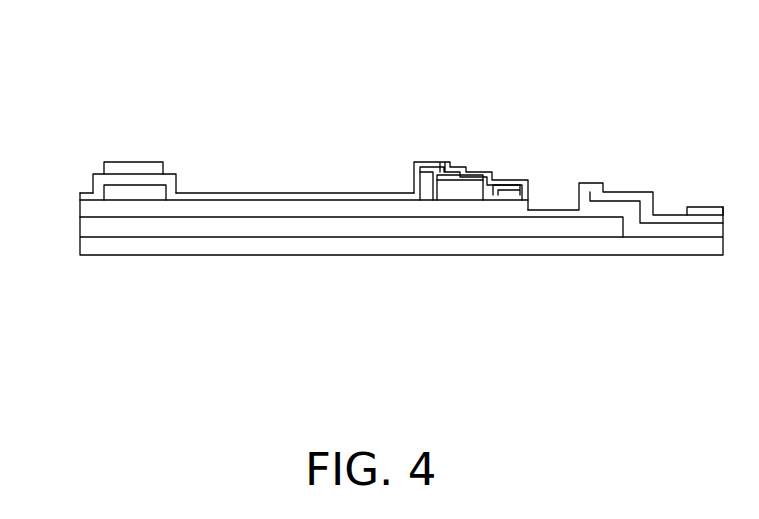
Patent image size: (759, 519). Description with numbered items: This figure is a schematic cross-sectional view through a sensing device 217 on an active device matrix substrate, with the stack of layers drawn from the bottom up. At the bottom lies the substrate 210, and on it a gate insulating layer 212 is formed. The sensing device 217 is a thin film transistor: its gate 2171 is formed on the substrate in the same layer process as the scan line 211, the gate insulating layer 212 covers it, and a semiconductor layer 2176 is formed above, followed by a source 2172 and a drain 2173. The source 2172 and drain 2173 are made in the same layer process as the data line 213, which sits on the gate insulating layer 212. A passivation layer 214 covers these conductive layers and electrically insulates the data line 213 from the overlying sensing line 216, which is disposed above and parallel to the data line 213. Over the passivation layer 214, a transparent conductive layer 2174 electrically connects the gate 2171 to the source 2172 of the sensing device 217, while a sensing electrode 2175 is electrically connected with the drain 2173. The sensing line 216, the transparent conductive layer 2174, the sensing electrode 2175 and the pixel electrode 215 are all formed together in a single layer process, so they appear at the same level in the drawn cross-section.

The substrate 210 is at (80, 252).
The scan line 211 is at (80, 228).
The gate insulating layer 212 is at (50, 227).
The data line 213 is at (93, 190).
The passivation layer 214 is at (57, 192).
The pixel electrode 215 is at (700, 207).
The sensing line 216 is at (112, 170).
The sensing device 217 is at (477, 118).
The gate 2171 is at (497, 222).
The source 2172 is at (472, 175).
The drain 2173 is at (432, 178).
The transparent conductive layer 2174 is at (580, 151).
The sensing electrode 2175 is at (410, 167).
The semiconductor layer 2176 is at (455, 187).